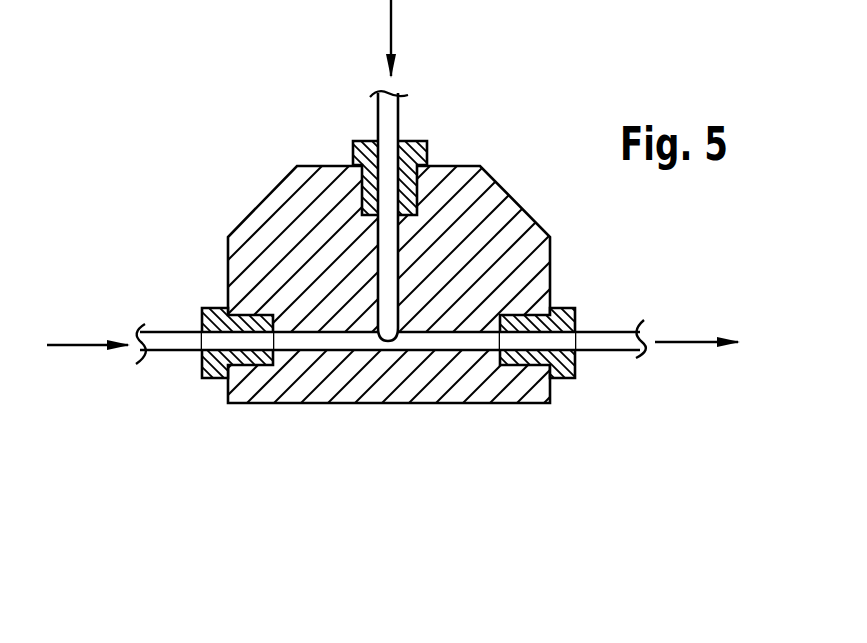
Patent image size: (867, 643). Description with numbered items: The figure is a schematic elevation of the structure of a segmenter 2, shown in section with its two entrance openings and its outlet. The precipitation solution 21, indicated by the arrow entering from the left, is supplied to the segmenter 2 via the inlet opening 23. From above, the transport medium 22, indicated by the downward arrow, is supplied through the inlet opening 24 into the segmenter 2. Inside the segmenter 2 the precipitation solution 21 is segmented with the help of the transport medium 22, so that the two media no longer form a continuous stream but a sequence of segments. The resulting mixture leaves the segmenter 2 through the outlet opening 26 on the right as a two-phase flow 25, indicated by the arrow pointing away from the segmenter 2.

The segmenter 2 is at (278, 222).
The precipitation solution 21 is at (88, 329).
The transport medium 22 is at (408, 39).
The inlet opening 23 is at (218, 340).
The inlet opening 24 is at (392, 152).
The two-phase flow 25 is at (697, 326).
The outlet opening 26 is at (558, 338).